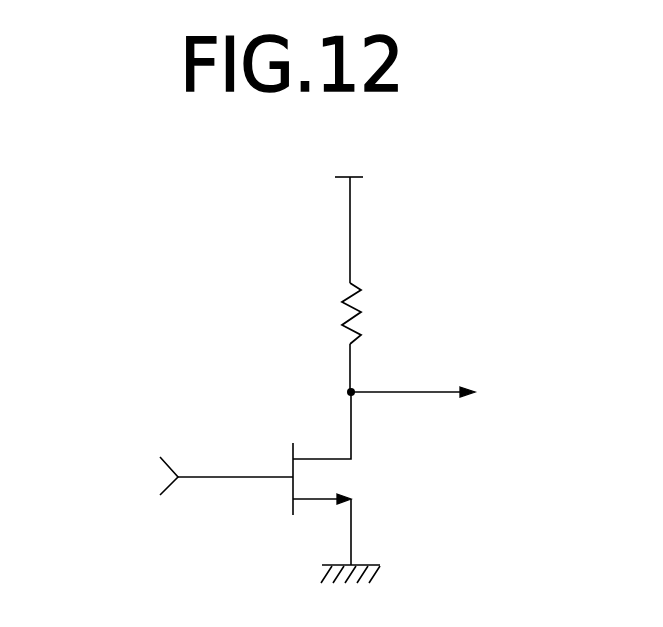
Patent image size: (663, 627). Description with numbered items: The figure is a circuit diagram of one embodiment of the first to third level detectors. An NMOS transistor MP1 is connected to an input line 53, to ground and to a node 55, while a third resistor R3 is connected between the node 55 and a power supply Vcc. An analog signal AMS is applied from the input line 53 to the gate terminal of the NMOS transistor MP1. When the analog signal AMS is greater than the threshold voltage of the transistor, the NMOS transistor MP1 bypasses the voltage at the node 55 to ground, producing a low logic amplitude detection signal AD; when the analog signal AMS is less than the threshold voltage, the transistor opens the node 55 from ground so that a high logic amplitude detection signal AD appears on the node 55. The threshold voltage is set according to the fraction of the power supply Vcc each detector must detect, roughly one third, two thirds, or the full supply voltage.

The input line 53 is at (209, 477).
The node 55 is at (388, 372).
The third resistor R3 is at (328, 337).
The NMOS transistor MP1 is at (352, 478).
The power supply Vcc is at (355, 207).
The amplitude detection signal AD is at (499, 391).
The analog signal AMS is at (130, 476).